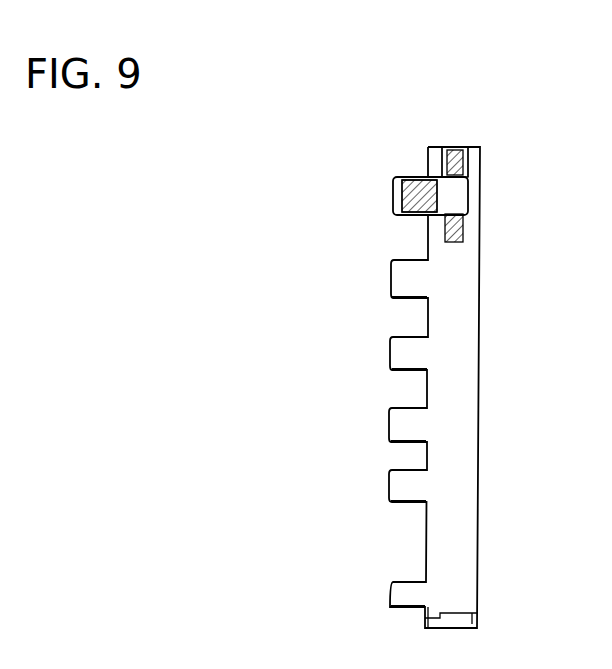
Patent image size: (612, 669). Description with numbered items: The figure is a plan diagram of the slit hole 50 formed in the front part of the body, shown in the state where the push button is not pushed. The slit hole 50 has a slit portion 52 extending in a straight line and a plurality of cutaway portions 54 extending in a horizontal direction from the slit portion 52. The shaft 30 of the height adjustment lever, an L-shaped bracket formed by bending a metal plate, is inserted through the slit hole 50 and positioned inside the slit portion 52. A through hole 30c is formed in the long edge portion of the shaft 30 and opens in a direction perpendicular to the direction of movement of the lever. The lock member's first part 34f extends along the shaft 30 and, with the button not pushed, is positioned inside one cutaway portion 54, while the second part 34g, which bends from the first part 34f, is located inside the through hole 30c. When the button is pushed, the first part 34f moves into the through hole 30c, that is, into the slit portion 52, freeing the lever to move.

The shaft 30 is at (466, 163).
The through hole 30c is at (458, 203).
The first part 34f is at (415, 176).
The second part 34g is at (452, 192).
The slit hole 50 is at (450, 351).
The slit portion 52 is at (455, 394).
The cutaway portion 54 is at (398, 195).